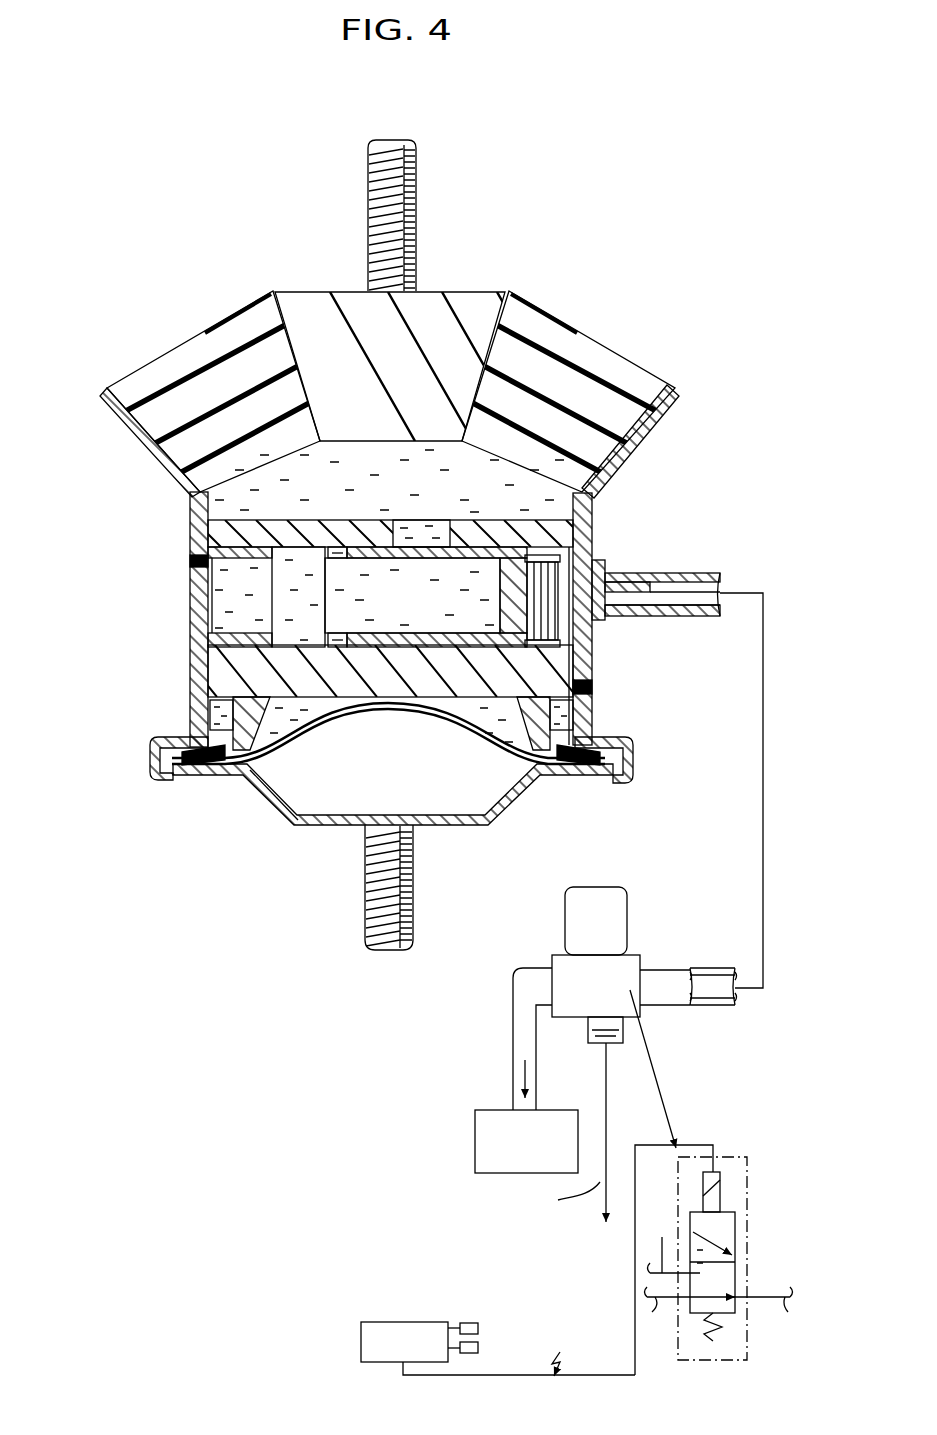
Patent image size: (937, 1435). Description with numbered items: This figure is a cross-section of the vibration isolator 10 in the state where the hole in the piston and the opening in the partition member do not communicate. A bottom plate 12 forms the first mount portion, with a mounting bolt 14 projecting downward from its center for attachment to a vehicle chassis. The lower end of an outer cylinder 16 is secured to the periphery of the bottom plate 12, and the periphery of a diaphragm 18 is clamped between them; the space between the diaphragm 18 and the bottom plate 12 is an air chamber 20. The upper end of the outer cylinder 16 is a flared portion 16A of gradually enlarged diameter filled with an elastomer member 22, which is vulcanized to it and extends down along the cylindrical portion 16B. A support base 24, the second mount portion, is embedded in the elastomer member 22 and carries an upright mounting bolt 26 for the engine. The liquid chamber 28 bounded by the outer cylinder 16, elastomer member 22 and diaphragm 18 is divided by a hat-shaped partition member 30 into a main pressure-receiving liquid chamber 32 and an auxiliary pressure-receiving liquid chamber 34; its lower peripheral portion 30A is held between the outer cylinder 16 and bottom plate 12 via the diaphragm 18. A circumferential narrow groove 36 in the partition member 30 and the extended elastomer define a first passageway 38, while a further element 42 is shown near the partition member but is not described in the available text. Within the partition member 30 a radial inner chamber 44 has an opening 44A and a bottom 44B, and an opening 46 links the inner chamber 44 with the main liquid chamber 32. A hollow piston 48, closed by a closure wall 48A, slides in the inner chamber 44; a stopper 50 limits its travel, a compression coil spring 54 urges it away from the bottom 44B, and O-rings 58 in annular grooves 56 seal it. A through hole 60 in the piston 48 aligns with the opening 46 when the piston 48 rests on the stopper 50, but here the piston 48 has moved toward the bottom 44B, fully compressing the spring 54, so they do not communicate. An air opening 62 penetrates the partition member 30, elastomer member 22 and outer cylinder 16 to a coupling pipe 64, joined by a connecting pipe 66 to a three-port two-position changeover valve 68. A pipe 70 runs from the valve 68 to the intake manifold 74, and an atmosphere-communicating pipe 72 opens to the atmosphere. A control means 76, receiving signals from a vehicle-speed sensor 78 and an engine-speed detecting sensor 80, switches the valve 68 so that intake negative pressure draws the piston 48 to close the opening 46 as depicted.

The vibration isolator 10 is at (582, 230).
The bottom plate 12 is at (290, 827).
The mounting bolt 14 is at (363, 888).
The outer cylinder 16 is at (187, 635).
The flared portion 16A is at (135, 435).
The cylindrical portion 16B is at (212, 587).
The diaphragm 18 is at (303, 737).
The air chamber 20 is at (405, 792).
The elastomer member 22 is at (170, 350).
The support base 24 is at (462, 291).
The mounting bolt 26 is at (418, 177).
The liquid chamber 28 is at (530, 497).
The partition member 30 is at (243, 515).
The lower peripheral portion 30A is at (197, 740).
The main pressure-receiving liquid chamber 32 is at (418, 505).
The auxiliary pressure-receiving liquid chamber 34 is at (497, 565).
The narrow groove 36 is at (213, 727).
The first passageway 38 is at (230, 712).
The intermediate chamber 42 is at (222, 604).
The inner chamber 44 is at (320, 713).
The opening 44A is at (190, 560).
The bottom 44B is at (597, 683).
The opening 46 is at (606, 352).
The piston 48 is at (590, 512).
The closure wall 48A is at (487, 723).
The stopper 50 is at (215, 624).
The compression coil spring 54 is at (573, 527).
The annular groove 56 is at (337, 546).
The O-ring 58 is at (345, 538).
The through hole 60 is at (457, 566).
The air opening 62 is at (687, 622).
The coupling pipe 64 is at (597, 632).
The connecting pipe 66 is at (695, 576).
The three-port two-position changeover valve 68 is at (628, 918).
The pipe 70 is at (540, 968).
The atmosphere-communicating pipe 72 is at (590, 1033).
The intake manifold 74 is at (475, 1145).
The control means 76 is at (377, 1322).
The vehicle-speed sensor 78 is at (518, 1300).
The engine-speed detecting sensor 80 is at (490, 1340).